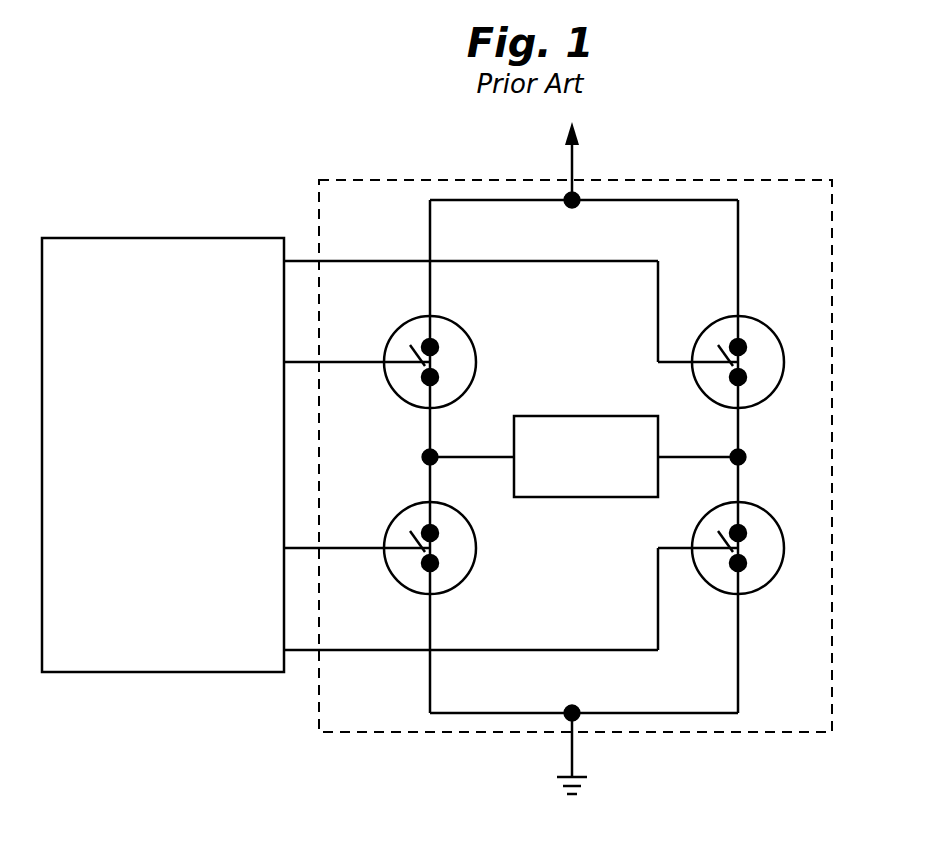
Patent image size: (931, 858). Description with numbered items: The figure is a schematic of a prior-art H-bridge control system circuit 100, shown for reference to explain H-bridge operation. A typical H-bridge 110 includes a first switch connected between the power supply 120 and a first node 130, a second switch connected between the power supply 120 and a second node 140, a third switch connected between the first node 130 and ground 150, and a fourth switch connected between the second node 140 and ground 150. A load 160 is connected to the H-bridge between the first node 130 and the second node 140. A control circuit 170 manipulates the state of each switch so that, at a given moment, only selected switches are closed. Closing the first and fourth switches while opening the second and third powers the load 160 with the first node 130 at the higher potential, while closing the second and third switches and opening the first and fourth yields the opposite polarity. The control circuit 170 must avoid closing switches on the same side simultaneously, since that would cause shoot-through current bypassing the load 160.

The circuit 100 is at (258, 720).
The H-bridge 110 is at (742, 180).
The power supply 120 is at (568, 168).
The first node 130 is at (422, 455).
The second node 140 is at (746, 452).
The ground 150 is at (568, 757).
The load 160 is at (584, 456).
The control circuit 170 is at (163, 455).